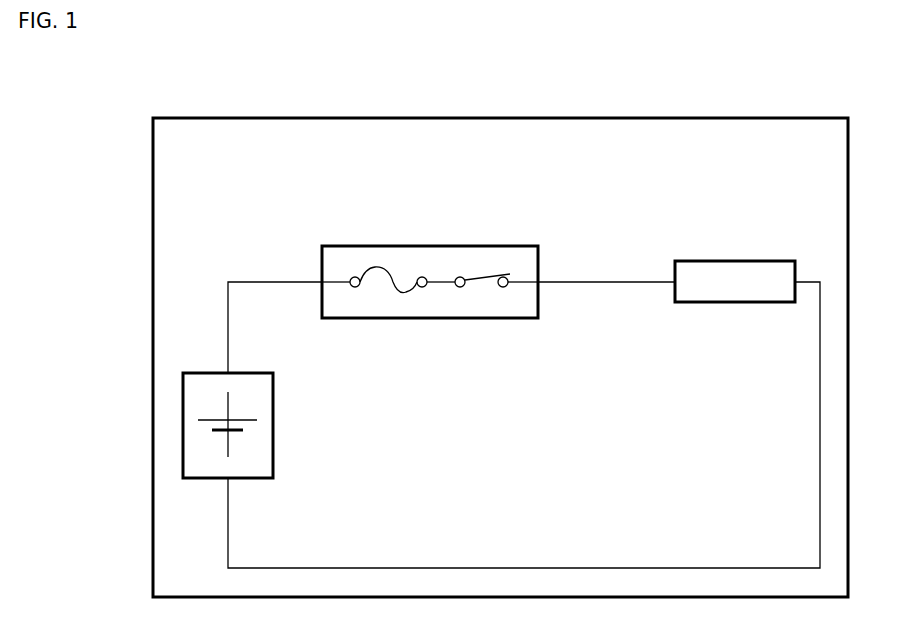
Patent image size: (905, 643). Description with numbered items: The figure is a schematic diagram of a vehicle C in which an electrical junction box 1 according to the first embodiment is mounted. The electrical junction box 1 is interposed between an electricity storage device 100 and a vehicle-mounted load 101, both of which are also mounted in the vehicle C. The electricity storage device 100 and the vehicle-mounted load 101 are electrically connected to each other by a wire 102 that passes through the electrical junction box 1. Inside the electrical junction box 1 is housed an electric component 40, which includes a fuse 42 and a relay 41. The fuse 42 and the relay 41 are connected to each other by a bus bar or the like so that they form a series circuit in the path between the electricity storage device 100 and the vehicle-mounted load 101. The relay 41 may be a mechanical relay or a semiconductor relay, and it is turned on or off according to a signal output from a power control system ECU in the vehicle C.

The vehicle C is at (218, 117).
The electrical junction box 1 is at (513, 320).
The electric component 40 is at (523, 192).
The relay 41 is at (480, 262).
The fuse 42 is at (388, 262).
The electricity storage device 100 is at (275, 420).
The vehicle-mounted load 101 is at (708, 258).
The wire 102 is at (590, 280).